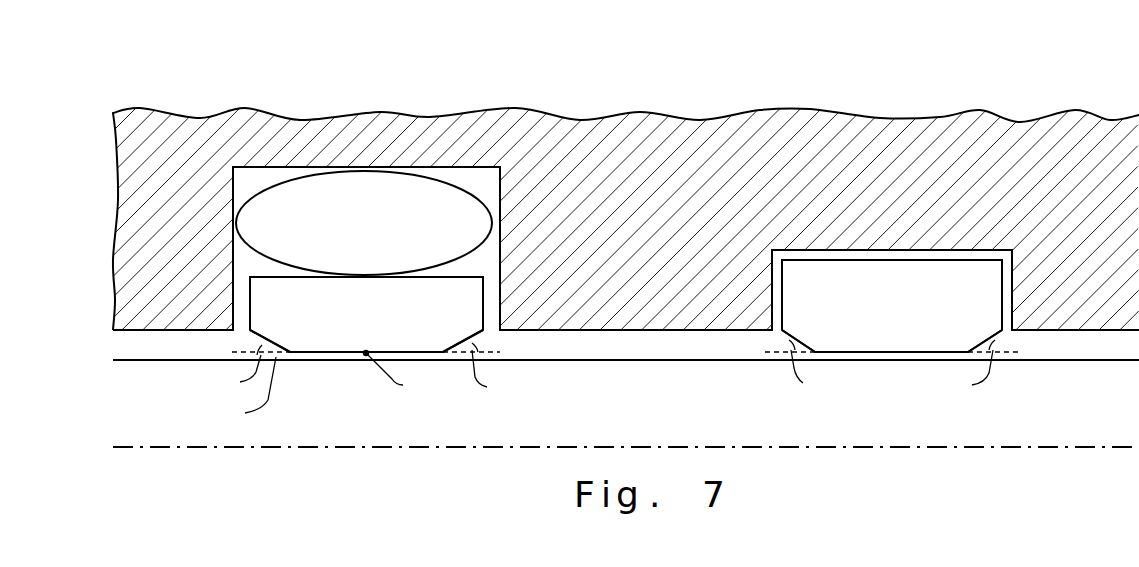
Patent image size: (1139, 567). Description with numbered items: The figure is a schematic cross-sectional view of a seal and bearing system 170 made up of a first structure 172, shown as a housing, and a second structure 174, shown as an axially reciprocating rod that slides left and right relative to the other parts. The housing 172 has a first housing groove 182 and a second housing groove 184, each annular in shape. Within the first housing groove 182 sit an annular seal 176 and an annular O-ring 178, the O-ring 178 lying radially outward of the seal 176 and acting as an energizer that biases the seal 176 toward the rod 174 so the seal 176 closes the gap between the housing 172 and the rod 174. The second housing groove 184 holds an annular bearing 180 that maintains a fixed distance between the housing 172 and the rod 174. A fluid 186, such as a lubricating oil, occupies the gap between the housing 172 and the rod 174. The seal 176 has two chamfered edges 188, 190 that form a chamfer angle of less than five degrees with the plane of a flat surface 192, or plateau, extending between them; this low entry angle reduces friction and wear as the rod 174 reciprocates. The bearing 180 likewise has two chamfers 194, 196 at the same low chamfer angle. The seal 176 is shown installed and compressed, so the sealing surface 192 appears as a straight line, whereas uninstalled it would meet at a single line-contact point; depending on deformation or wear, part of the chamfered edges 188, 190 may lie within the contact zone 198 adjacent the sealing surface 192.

The seal and bearing system 170 is at (626, 175).
The first structure 172 is at (620, 114).
The second structure 174 is at (690, 362).
The annular seal 176 is at (250, 290).
The annular O-ring 178 is at (252, 192).
The annular bearing 180 is at (864, 261).
The first housing groove 182 is at (267, 166).
The second housing groove 184 is at (810, 249).
The fluid 186 is at (649, 354).
The chamfered edge 188 is at (260, 348).
The chamfered edge 190 is at (456, 343).
The flat surface 192 is at (316, 356).
The chamfer 194 is at (798, 342).
The chamfer 196 is at (987, 342).
The contact zone 198 is at (246, 347).